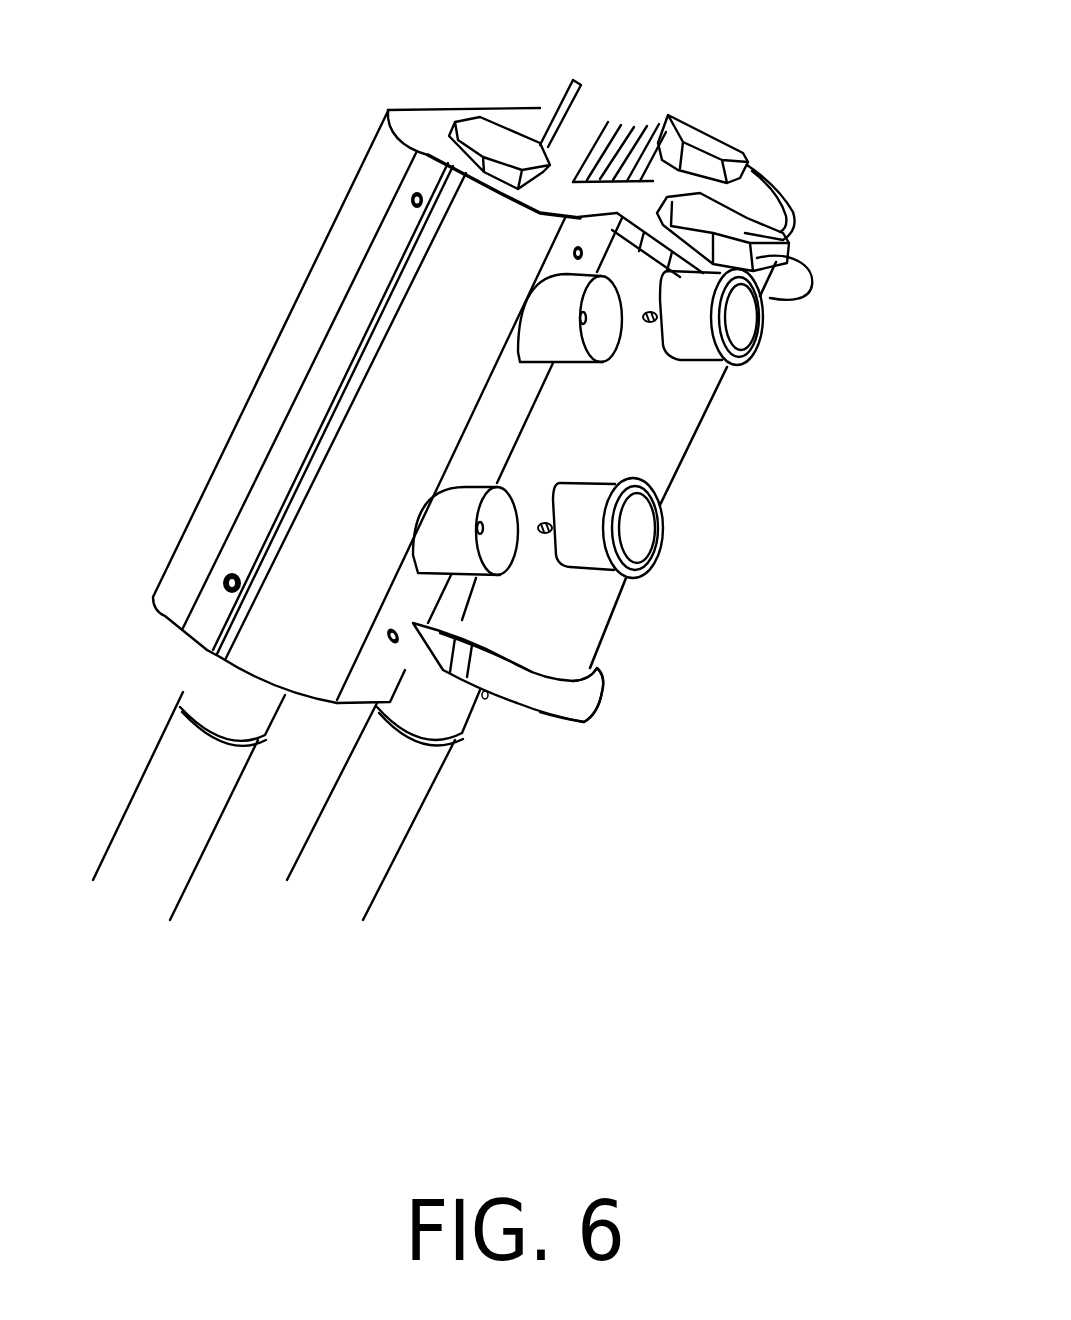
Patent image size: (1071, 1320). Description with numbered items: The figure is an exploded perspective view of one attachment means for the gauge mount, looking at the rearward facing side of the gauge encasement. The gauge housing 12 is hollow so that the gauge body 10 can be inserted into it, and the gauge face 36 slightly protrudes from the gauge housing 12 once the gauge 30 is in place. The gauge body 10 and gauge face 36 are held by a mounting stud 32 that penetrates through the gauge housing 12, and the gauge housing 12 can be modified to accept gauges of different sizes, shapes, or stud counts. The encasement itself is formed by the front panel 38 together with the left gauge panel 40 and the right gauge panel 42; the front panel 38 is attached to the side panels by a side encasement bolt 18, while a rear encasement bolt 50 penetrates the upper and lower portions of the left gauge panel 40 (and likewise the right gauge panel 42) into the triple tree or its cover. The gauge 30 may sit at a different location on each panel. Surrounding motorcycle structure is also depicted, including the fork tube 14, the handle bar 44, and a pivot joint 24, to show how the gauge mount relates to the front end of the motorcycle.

The gauge body 10 is at (663, 498).
The gauge housing 12 is at (577, 718).
The fork tube 14 is at (188, 807).
The side encasement bolt 18 is at (228, 587).
The pivot joint 24 is at (747, 233).
The gauge 30 is at (712, 386).
The mounting stud 32 is at (658, 315).
The gauge face 36 is at (745, 318).
The front panel 38 is at (220, 500).
The left gauge panel 40 is at (306, 655).
The right gauge panel 42 is at (765, 217).
The handle bar 44 is at (580, 132).
The rear encasement bolt 50 is at (578, 253).